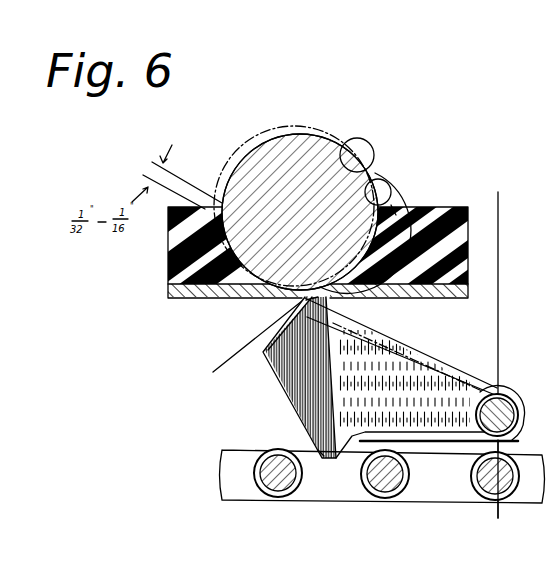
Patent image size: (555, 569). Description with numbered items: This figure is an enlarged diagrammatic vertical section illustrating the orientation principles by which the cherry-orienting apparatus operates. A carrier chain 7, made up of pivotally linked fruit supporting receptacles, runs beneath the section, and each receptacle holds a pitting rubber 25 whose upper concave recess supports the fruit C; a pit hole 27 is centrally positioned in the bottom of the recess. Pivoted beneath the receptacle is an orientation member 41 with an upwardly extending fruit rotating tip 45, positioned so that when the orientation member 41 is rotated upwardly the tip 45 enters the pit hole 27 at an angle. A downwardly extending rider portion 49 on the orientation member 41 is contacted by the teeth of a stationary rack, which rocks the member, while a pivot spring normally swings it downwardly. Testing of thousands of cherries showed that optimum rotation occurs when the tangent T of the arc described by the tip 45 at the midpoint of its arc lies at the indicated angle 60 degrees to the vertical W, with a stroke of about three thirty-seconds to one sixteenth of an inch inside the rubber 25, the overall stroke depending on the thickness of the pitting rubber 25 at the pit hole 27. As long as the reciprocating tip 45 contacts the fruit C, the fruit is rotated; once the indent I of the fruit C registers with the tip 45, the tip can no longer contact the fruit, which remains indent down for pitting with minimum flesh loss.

The pitting rubber 25 is at (429, 226).
The pit hole 27 is at (396, 208).
The orientation member 41 is at (400, 397).
The fruit rotating tip 45 is at (320, 310).
The rider portion 49 is at (318, 450).
The carrier chain 7 is at (213, 463).
The fruit C is at (274, 140).
The indent I is at (346, 140).
The tangent T is at (248, 342).
The vertical reference line W is at (500, 273).
The angle 60 is at (492, 313).